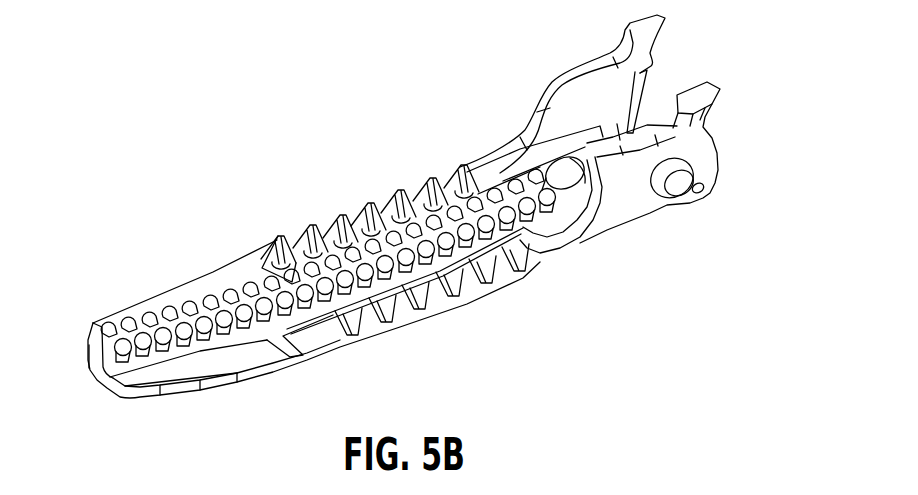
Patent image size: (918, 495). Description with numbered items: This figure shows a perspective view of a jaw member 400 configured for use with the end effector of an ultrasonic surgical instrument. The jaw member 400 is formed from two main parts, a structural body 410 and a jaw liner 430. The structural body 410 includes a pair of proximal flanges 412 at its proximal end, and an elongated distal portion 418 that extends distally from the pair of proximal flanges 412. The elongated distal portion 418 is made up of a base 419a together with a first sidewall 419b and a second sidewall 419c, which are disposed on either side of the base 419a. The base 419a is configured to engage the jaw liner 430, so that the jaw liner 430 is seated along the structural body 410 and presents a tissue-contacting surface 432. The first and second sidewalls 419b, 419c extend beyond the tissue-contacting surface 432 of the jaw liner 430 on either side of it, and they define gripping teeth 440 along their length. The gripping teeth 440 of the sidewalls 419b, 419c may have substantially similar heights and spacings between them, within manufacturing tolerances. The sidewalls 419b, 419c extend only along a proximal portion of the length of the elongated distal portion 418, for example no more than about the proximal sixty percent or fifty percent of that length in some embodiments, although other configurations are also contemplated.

The jaw member 400 is at (126, 137).
The structural body 410 is at (570, 252).
The proximal flanges 412 is at (607, 108).
The elongated distal portion 418 is at (467, 308).
The base 419a is at (91, 372).
The first sidewall 419b is at (338, 340).
The second sidewall 419c is at (283, 250).
The jaw liner 430 is at (170, 325).
The tissue-contacting surface 432 is at (195, 297).
The gripping teeth 440 is at (408, 200).